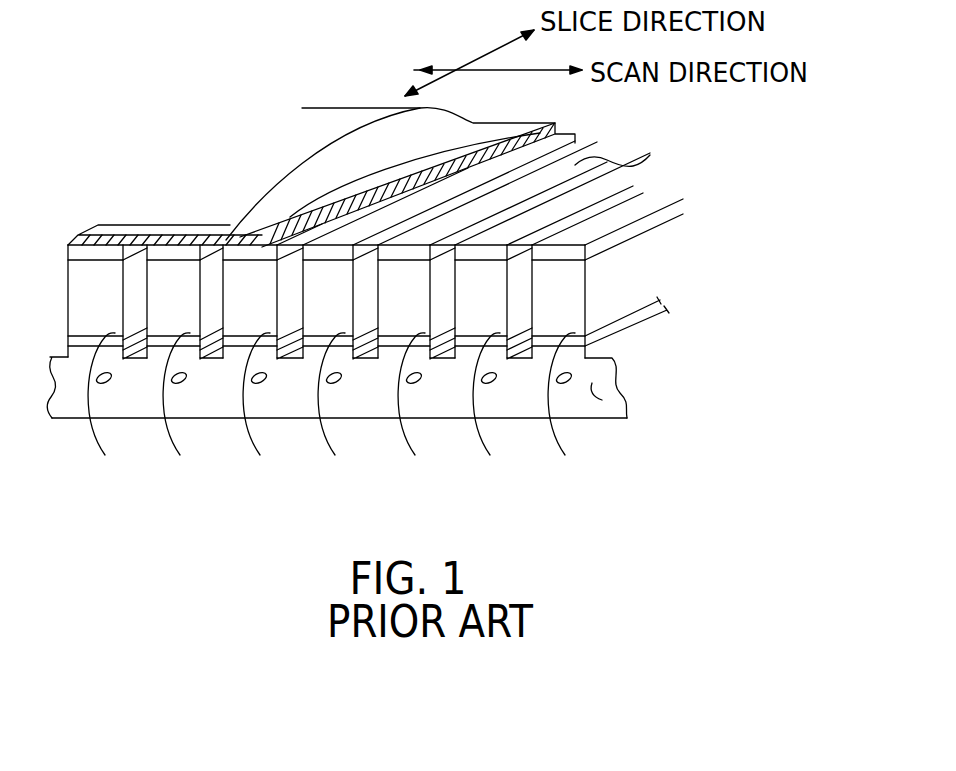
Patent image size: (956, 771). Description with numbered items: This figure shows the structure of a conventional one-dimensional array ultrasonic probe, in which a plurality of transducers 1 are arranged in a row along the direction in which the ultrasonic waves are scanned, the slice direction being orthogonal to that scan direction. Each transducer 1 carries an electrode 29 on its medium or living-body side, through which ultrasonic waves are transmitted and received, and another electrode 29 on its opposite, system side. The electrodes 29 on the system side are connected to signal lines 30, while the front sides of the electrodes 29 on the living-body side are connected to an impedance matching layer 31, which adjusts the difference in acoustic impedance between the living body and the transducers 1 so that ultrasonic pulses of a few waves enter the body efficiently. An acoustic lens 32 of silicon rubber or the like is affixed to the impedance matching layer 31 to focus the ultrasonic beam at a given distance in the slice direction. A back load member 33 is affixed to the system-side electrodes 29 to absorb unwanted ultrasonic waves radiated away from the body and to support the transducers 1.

The transducer 1 is at (572, 298).
The electrode 29 is at (668, 307).
The signal line 30 is at (550, 430).
The impedance matching layer 31 is at (518, 119).
The acoustic lens 32 is at (237, 197).
The back load member 33 is at (620, 397).